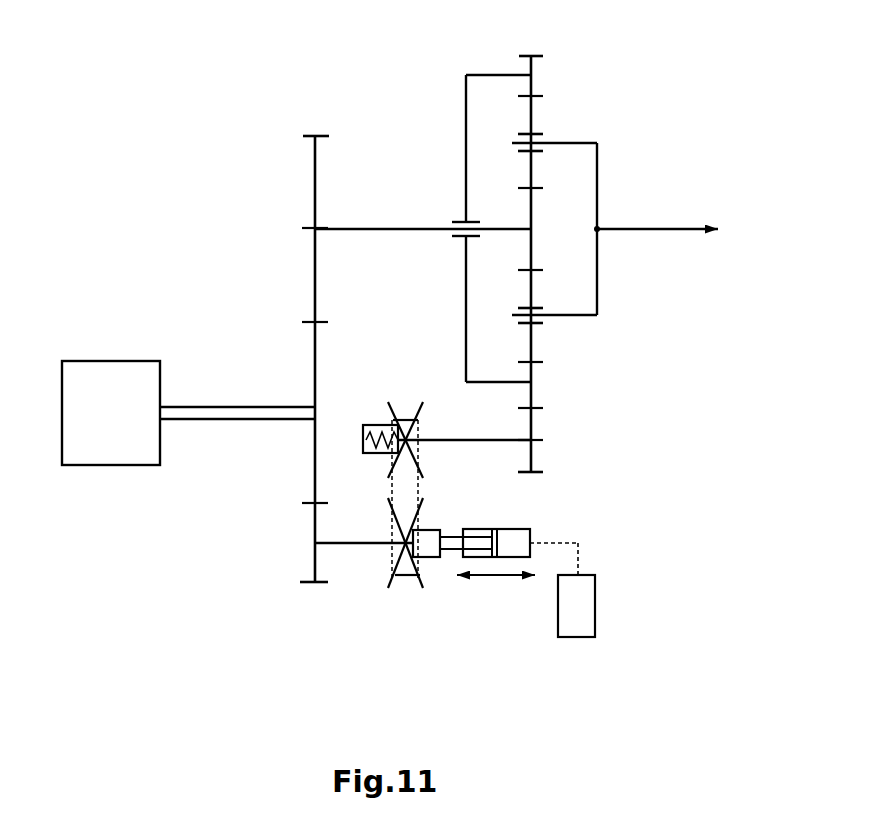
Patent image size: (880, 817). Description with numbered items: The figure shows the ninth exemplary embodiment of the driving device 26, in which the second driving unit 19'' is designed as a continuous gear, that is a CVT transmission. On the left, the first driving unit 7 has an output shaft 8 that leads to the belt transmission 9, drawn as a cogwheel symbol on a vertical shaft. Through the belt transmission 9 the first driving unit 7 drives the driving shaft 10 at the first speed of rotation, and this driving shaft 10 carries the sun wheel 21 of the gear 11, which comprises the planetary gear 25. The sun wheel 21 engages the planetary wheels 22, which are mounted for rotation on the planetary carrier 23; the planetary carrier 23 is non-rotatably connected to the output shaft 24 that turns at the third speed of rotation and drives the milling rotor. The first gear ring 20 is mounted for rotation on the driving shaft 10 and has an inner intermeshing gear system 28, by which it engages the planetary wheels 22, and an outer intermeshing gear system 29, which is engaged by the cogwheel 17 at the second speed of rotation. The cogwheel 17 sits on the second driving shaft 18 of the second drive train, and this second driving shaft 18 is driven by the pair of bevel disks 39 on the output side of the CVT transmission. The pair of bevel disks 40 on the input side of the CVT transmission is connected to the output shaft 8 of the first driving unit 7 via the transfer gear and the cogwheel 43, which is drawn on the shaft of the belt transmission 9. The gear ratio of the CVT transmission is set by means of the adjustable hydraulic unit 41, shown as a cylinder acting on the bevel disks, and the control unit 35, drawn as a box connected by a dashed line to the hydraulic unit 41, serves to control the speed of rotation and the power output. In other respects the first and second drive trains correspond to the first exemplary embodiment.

The driving device 26 is at (123, 167).
The first driving unit 7 is at (110, 452).
The output shaft 8 is at (250, 422).
The belt transmission 9 is at (295, 270).
The driving shaft 10 is at (395, 237).
The first gear ring 20 is at (466, 143).
The planetary wheels 22 is at (531, 120).
The planetary carrier 23 is at (597, 160).
The sun wheel 21 is at (531, 255).
The output shaft 24 is at (672, 232).
The inner intermeshing gear system 28 is at (531, 365).
The outer intermeshing gear system 29 is at (531, 410).
The cogwheel 17 is at (531, 452).
The gear 11 is at (658, 372).
The planetary gear 25 is at (637, 500).
The second driving shaft 18 is at (487, 445).
The pair of bevel disks 39 is at (415, 410).
The pair of bevel disks 40 is at (385, 588).
The second driving unit 19'' is at (458, 609).
The adjustable hydraulic unit 41 is at (522, 556).
The control unit 35 is at (575, 602).
The cogwheel 43 is at (310, 555).